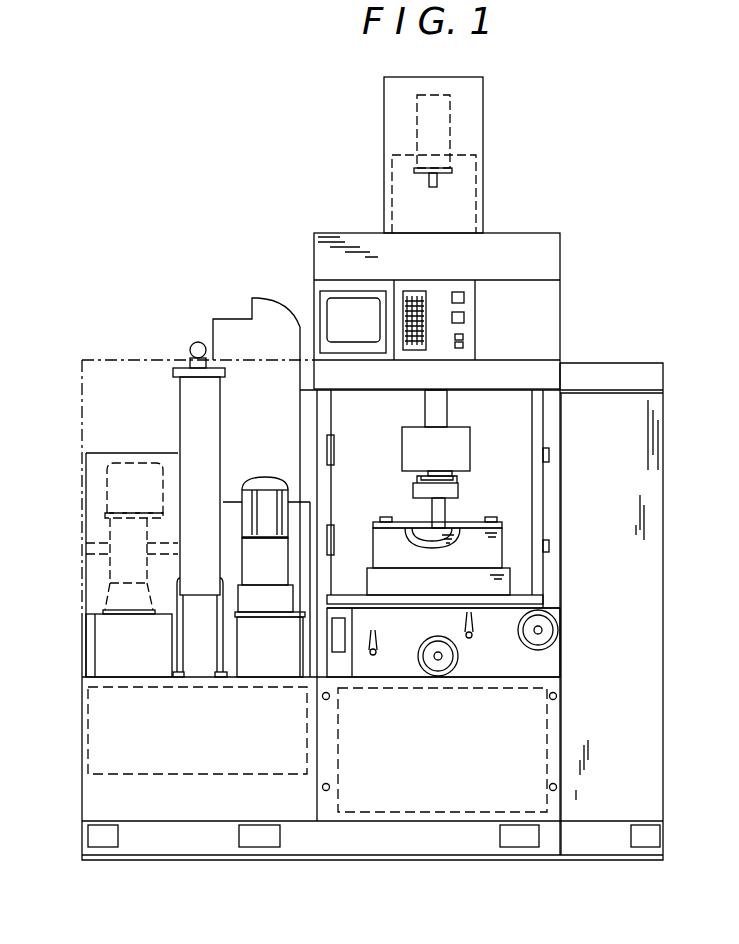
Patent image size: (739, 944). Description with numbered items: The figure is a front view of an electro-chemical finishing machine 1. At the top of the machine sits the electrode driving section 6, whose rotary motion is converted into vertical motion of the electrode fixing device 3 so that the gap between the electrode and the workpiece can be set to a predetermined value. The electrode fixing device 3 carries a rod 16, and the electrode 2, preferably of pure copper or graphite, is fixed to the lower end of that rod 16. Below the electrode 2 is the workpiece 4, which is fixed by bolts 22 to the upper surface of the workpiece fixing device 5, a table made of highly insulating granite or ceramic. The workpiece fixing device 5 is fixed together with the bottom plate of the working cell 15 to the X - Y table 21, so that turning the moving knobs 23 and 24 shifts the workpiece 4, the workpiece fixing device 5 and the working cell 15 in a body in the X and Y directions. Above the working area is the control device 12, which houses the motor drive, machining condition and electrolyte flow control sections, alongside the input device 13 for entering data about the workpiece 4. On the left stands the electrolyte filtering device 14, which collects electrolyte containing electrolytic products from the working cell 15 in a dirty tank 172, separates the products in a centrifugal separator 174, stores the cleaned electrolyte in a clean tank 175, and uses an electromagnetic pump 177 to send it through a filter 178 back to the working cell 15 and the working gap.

The electro-chemical finishing machine 1 is at (176, 150).
The electrode driving section 6 is at (448, 122).
The input device 13 is at (440, 335).
The control device 12 is at (640, 405).
The electrolyte filtering device 14 is at (102, 350).
The working cell 15 is at (316, 413).
The filter 178 is at (178, 433).
The centrifugal separator 174 is at (107, 497).
The electromagnetic pump 177 is at (232, 655).
The clean tank 175 is at (88, 746).
The dirty tank 172 is at (400, 812).
The X - Y table 21 is at (550, 664).
The moving knob 24 is at (445, 675).
The moving knob 23 is at (560, 628).
The electrode fixing device 3 is at (458, 490).
The rod 16 is at (442, 507).
The electrode 2 is at (455, 515).
The bolts 22 is at (448, 530).
The workpiece 4 is at (505, 557).
The workpiece fixing device 5 is at (512, 578).